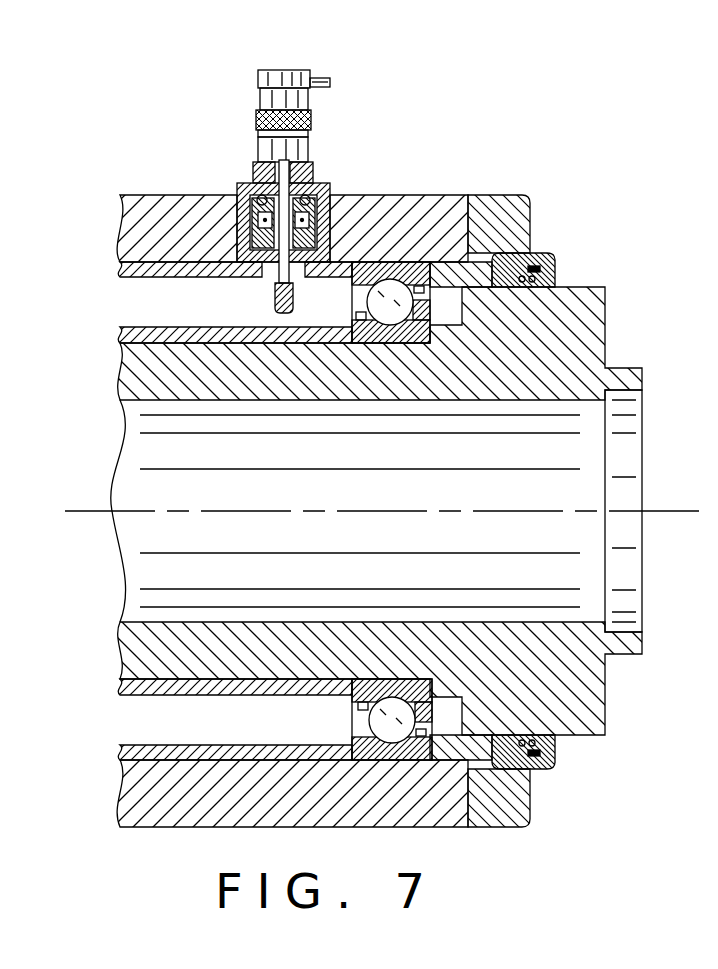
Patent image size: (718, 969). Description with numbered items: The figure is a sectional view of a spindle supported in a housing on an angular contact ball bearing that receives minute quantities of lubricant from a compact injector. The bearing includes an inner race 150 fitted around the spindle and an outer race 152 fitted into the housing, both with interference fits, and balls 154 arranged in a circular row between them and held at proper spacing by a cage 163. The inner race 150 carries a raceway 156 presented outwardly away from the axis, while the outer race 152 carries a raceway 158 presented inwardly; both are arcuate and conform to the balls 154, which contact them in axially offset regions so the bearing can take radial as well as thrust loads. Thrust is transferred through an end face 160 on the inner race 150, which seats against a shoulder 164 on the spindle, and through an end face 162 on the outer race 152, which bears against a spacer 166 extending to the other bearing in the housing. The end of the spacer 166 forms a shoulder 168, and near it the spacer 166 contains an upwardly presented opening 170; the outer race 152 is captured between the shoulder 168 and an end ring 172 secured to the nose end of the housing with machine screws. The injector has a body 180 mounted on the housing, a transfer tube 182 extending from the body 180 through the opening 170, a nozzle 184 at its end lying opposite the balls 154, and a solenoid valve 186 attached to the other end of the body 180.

The inner race 150 is at (382, 364).
The outer race 152 is at (410, 262).
The balls 154 is at (373, 322).
The raceway 156 is at (416, 660).
The raceway 158 is at (398, 703).
The end face 160 is at (437, 682).
The end face 162 is at (307, 743).
The cage 163 is at (420, 290).
The shoulder 164 is at (416, 338).
The spacer 166 is at (155, 278).
The shoulder 168 is at (375, 260).
The opening 170 is at (258, 290).
The end ring 172 is at (512, 224).
The body 180 is at (241, 256).
The transfer tube 182 is at (295, 285).
The nozzle 184 is at (272, 275).
The solenoid valve 186 is at (272, 98).